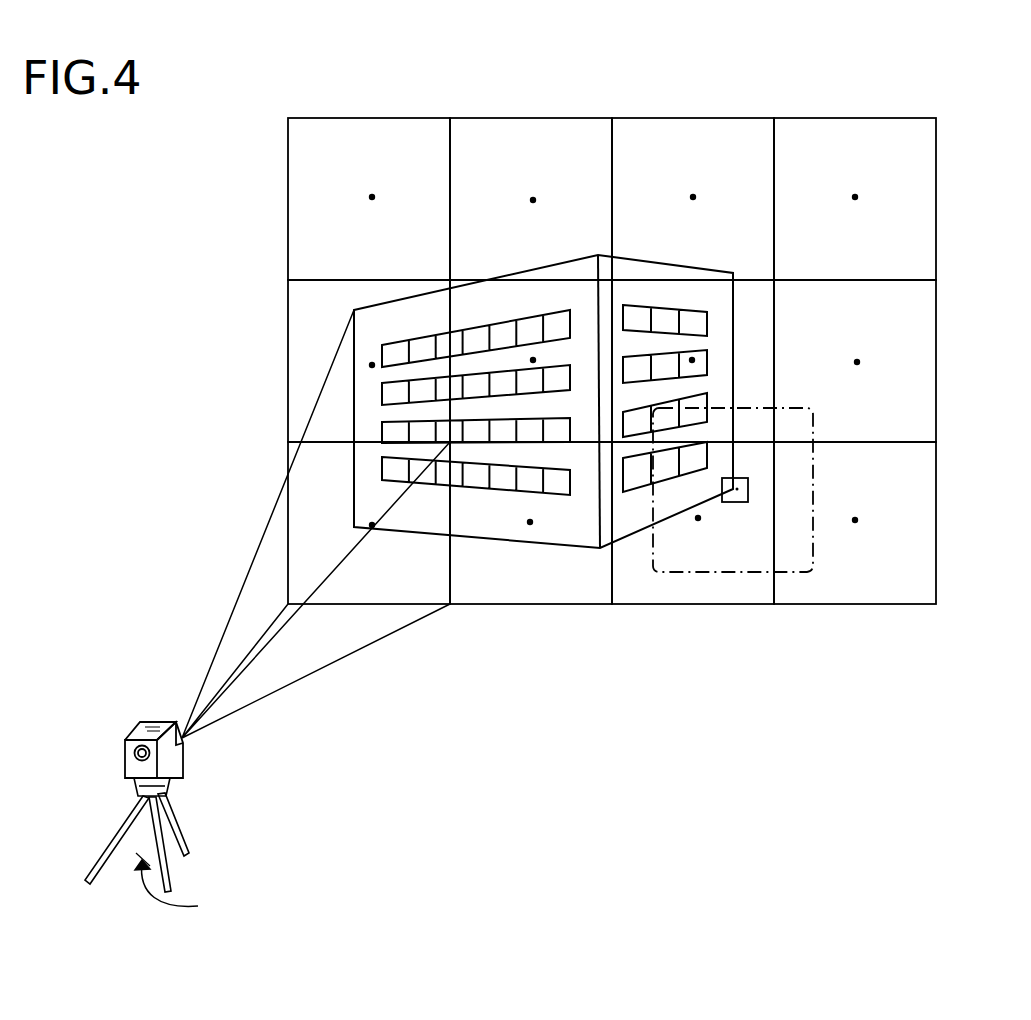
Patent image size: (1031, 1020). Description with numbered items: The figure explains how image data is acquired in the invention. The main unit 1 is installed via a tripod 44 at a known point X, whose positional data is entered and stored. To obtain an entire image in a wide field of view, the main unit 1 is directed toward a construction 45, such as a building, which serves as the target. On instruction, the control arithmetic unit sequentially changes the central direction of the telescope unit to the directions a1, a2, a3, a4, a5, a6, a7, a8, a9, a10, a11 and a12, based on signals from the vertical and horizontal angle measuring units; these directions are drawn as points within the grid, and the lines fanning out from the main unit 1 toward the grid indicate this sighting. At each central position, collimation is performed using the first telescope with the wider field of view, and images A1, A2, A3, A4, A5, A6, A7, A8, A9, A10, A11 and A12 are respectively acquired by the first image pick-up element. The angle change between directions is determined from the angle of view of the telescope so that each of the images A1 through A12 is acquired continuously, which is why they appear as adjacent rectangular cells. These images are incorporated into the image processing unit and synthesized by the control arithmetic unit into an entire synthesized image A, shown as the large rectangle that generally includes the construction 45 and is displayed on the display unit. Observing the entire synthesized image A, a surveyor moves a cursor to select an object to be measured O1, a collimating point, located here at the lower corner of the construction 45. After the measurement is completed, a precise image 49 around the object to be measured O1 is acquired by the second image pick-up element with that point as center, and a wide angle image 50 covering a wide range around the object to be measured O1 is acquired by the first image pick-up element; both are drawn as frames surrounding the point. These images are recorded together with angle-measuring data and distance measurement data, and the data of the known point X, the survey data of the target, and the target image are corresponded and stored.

The entire synthesized image A is at (607, 375).
The image A1 is at (322, 158).
The image A2 is at (497, 150).
The image A3 is at (655, 155).
The image A4 is at (812, 152).
The image A5 is at (313, 326).
The image A6 is at (497, 300).
The image A7 is at (747, 300).
The image A8 is at (918, 298).
The image A9 is at (390, 580).
The image A10 is at (500, 578).
The image A11 is at (683, 587).
The image A12 is at (908, 553).
The direction a1 is at (372, 197).
The direction a2 is at (533, 200).
The direction a3 is at (693, 197).
The direction a4 is at (855, 197).
The direction a5 is at (372, 365).
The direction a6 is at (533, 360).
The direction a7 is at (692, 360).
The direction a8 is at (857, 362).
The direction a9 is at (372, 525).
The direction a10 is at (530, 522).
The direction a11 is at (698, 518).
The direction a12 is at (855, 520).
The construction 45 is at (733, 349).
The precise image 49 is at (742, 478).
The wide angle image 50 is at (817, 425).
The object to be measured O1 is at (737, 489).
The main unit 1 is at (138, 722).
The tripod 44 is at (116, 826).
The known point X is at (178, 887).